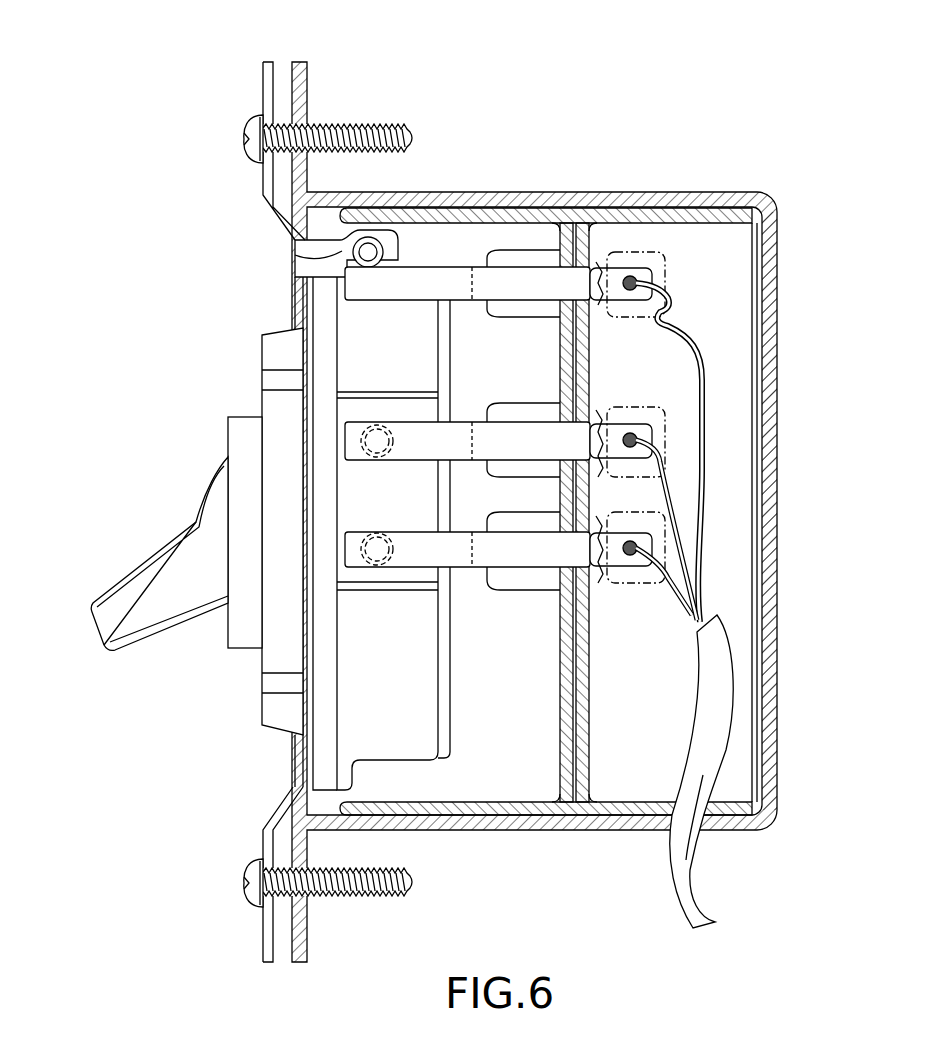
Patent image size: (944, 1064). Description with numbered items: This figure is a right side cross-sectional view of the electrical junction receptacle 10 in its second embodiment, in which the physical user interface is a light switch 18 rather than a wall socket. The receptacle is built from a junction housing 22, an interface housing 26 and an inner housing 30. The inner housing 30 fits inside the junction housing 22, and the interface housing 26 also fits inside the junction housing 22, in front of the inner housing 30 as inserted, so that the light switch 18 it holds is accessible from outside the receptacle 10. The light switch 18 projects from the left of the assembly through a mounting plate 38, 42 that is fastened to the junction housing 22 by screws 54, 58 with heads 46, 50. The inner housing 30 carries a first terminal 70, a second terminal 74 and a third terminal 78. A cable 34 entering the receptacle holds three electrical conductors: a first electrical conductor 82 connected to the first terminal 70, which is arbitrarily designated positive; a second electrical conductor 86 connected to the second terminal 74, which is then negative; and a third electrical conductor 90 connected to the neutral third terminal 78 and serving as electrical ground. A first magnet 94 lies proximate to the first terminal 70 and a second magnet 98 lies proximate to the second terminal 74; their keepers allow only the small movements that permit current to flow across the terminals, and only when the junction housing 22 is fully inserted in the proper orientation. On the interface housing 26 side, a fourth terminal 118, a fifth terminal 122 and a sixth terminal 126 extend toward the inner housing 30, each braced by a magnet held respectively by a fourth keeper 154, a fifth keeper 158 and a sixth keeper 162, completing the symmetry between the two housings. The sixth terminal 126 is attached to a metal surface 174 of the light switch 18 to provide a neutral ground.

The electrical junction receptacle 10 is at (616, 142).
The light switch 18 is at (199, 469).
The junction housing 22 is at (620, 193).
The interface housing 26 is at (406, 222).
The inner housing 30 is at (762, 230).
The cable 34 is at (696, 882).
The upper mounting plate 38 is at (262, 184).
The lower mounting plate 42 is at (262, 833).
The upper screw head 46 is at (262, 130).
The lower screw head 50 is at (245, 905).
The upper screw 54 is at (378, 127).
The lower screw 58 is at (337, 909).
The first terminal 70 is at (630, 540).
The second terminal 74 is at (630, 430).
The third terminal 78 is at (624, 302).
The first electrical conductor 82 is at (668, 592).
The second electrical conductor 86 is at (680, 520).
The third electrical conductor 90 is at (704, 362).
The first magnet 94 is at (603, 588).
The second magnet 98 is at (602, 428).
The fourth terminal 118 is at (410, 580).
The fifth terminal 122 is at (422, 455).
The sixth terminal 126 is at (424, 295).
The fourth keeper 154 is at (520, 312).
The fifth keeper 158 is at (500, 405).
The sixth keeper 162 is at (505, 580).
The metal surface 174 is at (340, 252).